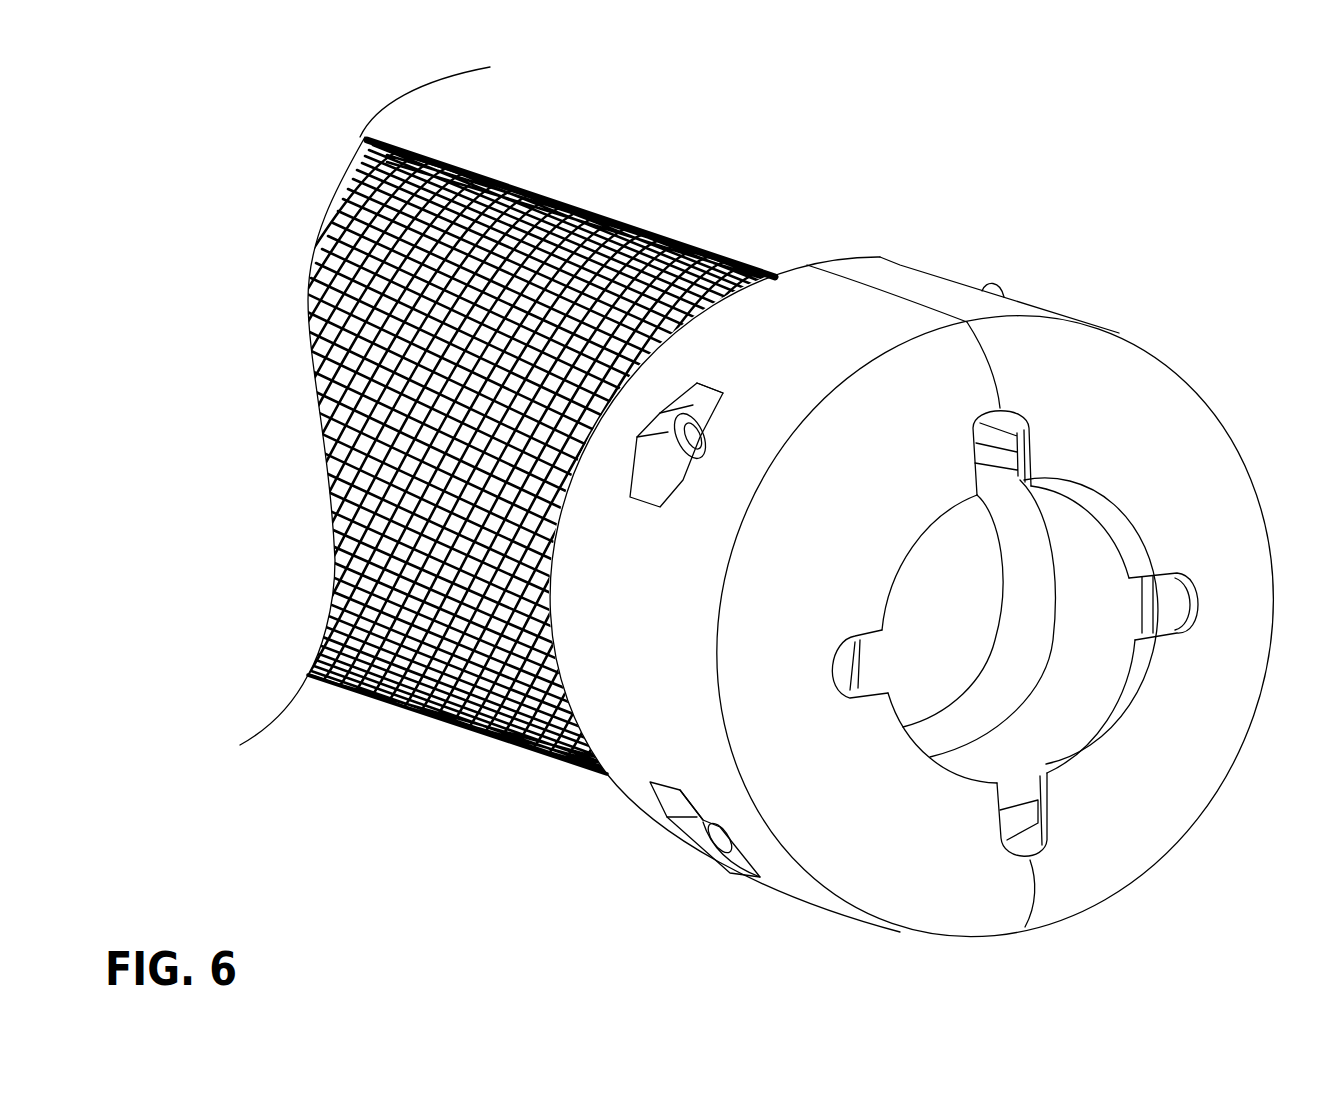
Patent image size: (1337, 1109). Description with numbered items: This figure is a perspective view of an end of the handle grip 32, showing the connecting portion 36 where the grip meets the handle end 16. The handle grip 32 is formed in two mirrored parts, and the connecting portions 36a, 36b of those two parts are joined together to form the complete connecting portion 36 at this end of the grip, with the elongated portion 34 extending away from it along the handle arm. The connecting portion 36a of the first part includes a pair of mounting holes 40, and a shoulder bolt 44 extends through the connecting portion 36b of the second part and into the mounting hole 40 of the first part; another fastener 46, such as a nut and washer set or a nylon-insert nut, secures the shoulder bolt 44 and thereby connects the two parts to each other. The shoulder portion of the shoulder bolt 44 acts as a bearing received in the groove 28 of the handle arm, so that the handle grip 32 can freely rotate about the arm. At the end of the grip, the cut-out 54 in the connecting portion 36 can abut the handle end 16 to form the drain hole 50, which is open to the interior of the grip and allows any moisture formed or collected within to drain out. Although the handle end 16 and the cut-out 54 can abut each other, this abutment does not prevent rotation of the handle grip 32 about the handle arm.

The handle end 16 is at (1000, 453).
The first groove 28 is at (1030, 655).
The handle grip 32 is at (1185, 189).
The elongated portion 34 is at (549, 278).
The connecting portion 36 is at (937, 292).
The connecting portion of the first part 36a is at (915, 813).
The connecting portion of the second part 36b is at (1120, 815).
The mounting hole 40 is at (333, 500).
The shoulder bolt 44 is at (693, 432).
The fastener 46 is at (1003, 287).
The drain hole 50 is at (1175, 595).
The cut-out 54 is at (1197, 600).